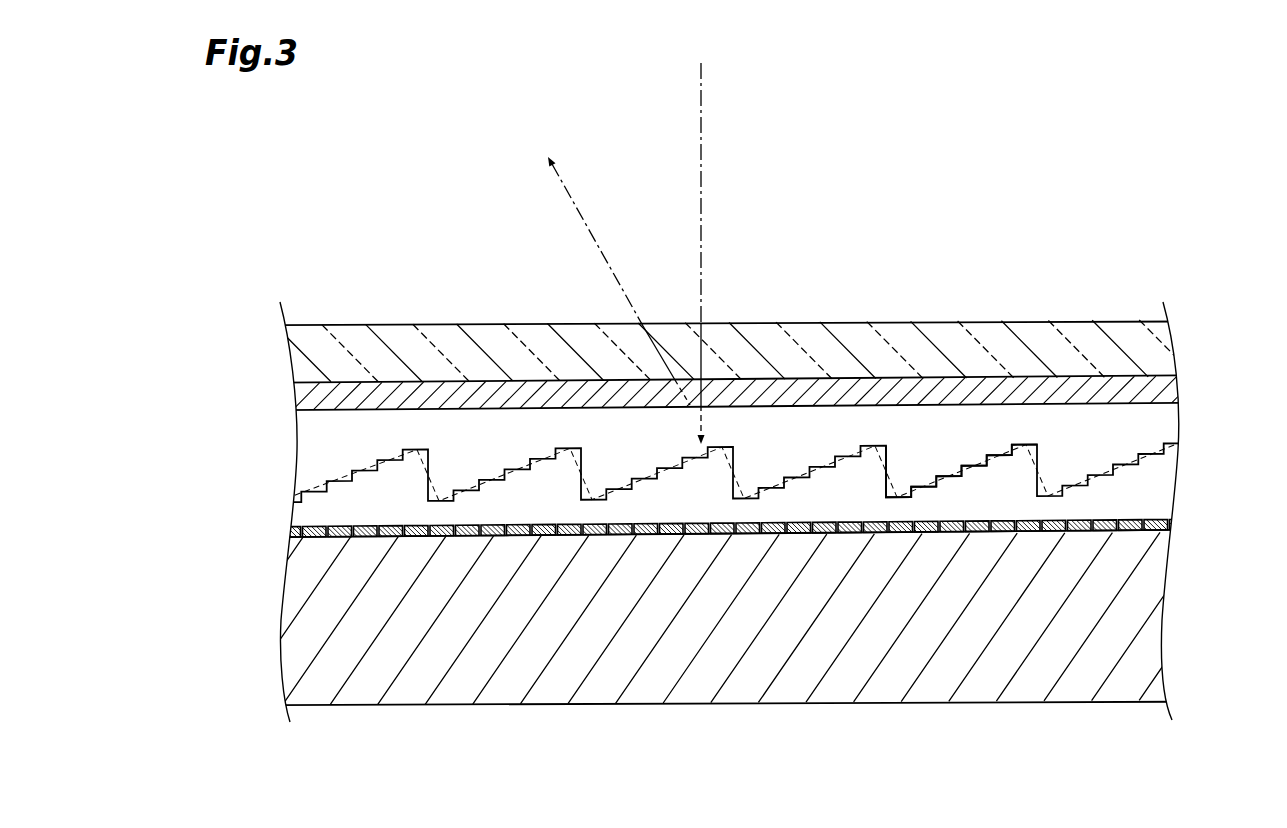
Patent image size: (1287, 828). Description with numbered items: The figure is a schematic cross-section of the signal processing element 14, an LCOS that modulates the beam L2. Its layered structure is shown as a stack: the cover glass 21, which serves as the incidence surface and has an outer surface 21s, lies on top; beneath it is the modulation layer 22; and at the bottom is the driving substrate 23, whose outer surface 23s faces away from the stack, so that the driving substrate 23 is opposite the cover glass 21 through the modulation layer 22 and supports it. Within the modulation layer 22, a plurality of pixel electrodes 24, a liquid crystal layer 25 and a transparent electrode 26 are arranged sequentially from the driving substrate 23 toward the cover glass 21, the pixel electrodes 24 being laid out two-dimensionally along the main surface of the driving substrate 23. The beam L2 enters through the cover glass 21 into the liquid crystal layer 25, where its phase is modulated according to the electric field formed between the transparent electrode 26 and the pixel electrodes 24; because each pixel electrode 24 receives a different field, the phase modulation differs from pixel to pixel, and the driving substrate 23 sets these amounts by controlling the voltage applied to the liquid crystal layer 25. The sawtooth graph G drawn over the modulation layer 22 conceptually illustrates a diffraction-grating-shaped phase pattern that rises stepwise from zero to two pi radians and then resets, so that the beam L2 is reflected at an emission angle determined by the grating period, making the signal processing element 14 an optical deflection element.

The signal processing element 14 is at (1138, 195).
The cover glass 21 is at (1170, 332).
The outer surface of first substrate 21s is at (1110, 323).
The modulation layer 22 is at (766, 453).
The driving substrate 23 is at (1152, 610).
The outer surface of second substrate 23s is at (1073, 705).
The pixel electrodes 24 is at (744, 515).
The liquid crystal layer 25 is at (1161, 472).
The transparent electrode 26 is at (1173, 383).
The graph G is at (877, 435).
The beam L2 is at (703, 127).